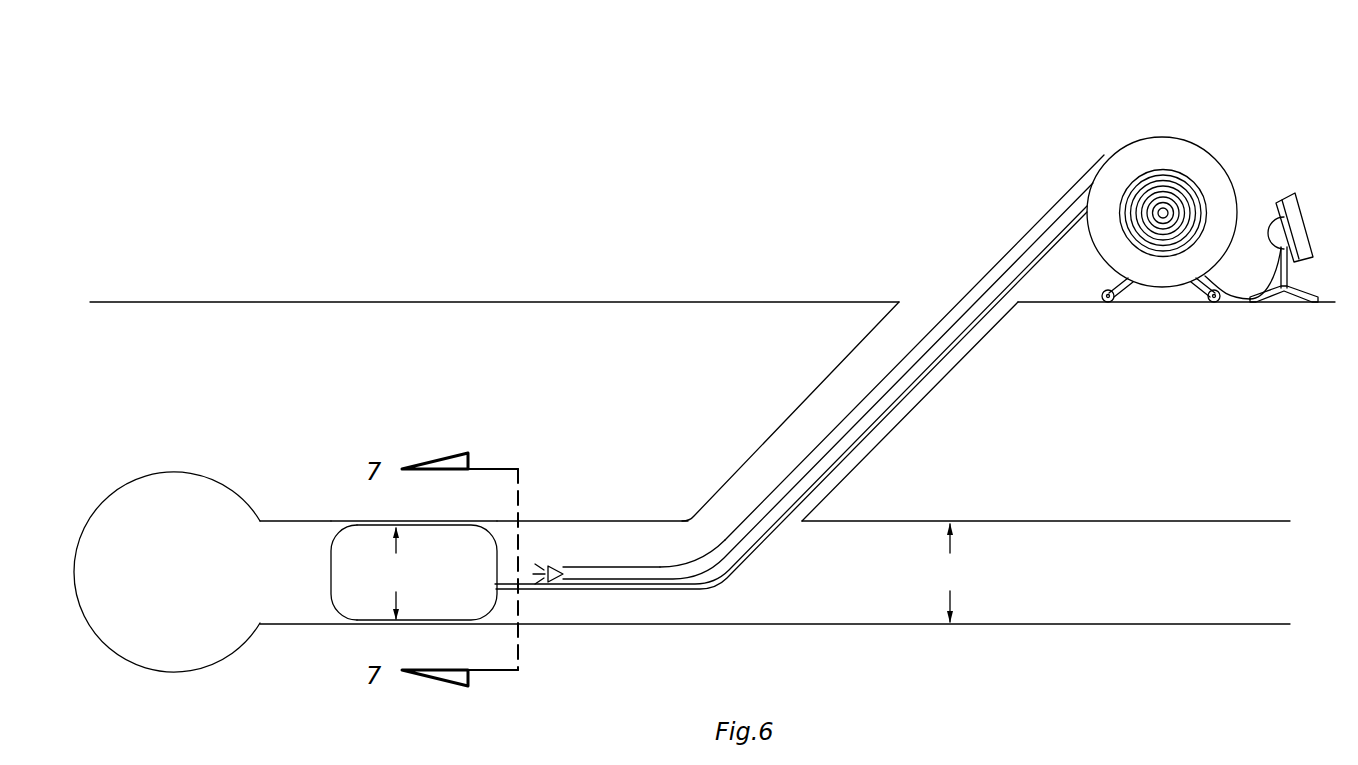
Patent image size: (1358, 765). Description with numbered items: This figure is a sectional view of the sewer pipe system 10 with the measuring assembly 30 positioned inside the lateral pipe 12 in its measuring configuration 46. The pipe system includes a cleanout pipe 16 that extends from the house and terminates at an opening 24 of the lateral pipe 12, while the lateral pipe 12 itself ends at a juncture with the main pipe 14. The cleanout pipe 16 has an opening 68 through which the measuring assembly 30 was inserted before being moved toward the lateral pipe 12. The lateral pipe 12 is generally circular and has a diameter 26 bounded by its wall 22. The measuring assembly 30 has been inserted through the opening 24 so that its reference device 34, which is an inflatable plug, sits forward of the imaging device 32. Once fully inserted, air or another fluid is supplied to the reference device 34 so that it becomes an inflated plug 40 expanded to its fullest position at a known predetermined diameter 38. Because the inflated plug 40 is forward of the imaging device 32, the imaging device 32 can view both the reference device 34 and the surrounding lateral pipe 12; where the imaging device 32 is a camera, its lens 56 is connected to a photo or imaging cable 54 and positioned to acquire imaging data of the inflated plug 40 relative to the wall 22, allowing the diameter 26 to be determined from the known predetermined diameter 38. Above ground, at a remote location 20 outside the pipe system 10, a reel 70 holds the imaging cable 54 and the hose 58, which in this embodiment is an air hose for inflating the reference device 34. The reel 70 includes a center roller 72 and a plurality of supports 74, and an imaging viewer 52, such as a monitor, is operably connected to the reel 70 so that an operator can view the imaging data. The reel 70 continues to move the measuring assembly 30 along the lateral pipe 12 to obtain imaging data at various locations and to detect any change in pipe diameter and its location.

The sewer pipe system 10 is at (598, 395).
The lateral pipe 12 is at (1115, 520).
The main pipe 14 is at (228, 484).
The cleanout pipe 16 is at (956, 365).
The remote location 20 is at (1075, 68).
The wall 22 is at (793, 623).
The opening 24 is at (693, 521).
The diameter 26 is at (968, 572).
The measuring assembly 30 is at (996, 265).
The imaging device 32 is at (560, 570).
The reference device 34 is at (342, 526).
The predetermined diameter 38 is at (413, 572).
The inflated plug 40 is at (330, 573).
The measuring configuration 46 is at (360, 521).
The imaging viewer 52 is at (1300, 212).
The imaging cable 54 is at (706, 553).
The lens 56 is at (551, 568).
The hose 58 is at (720, 578).
The opening 68 is at (1020, 305).
The reel 70 is at (1157, 137).
The center roller 72 is at (1163, 213).
The supports 74 is at (1108, 286).